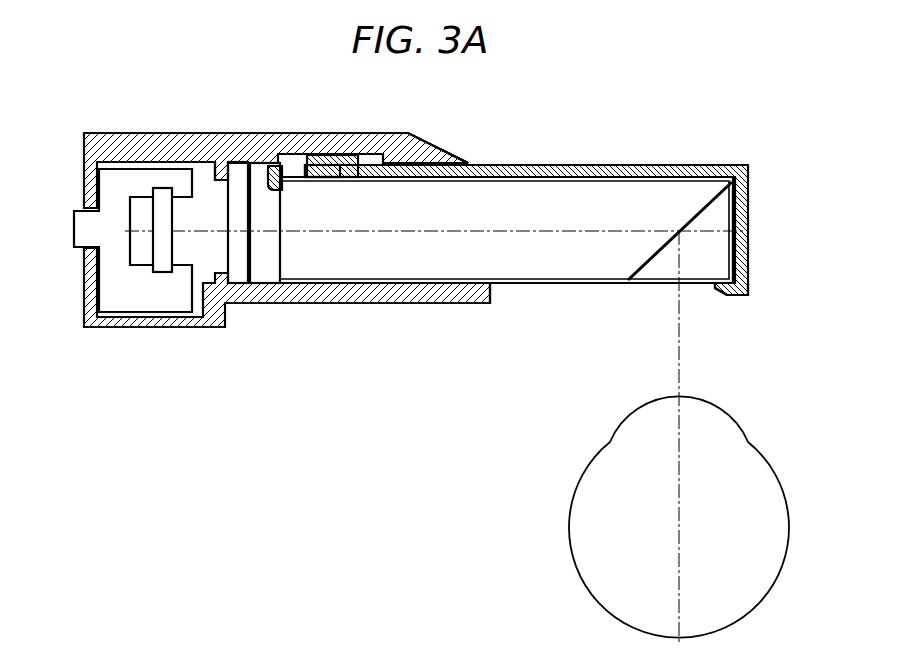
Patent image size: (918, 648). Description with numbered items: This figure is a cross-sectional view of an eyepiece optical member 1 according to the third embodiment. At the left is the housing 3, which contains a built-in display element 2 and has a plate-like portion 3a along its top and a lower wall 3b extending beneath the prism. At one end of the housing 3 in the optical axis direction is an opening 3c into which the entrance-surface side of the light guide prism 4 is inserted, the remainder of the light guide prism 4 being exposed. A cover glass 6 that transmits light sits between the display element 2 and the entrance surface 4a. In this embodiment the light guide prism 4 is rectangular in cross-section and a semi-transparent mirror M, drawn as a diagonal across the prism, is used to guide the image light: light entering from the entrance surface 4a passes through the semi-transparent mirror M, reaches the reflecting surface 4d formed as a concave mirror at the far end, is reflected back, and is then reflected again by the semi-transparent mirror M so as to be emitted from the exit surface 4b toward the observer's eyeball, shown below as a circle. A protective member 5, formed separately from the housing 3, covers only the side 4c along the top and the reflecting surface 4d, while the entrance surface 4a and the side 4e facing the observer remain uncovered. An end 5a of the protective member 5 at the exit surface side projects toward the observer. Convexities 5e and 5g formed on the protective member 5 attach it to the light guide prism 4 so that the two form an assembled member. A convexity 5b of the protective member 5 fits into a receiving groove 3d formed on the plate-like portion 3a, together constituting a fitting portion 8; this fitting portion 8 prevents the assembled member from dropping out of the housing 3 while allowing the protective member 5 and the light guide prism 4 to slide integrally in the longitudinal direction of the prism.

The eyepiece optical member 1 is at (590, 102).
The display element 2 is at (100, 231).
The housing 3 is at (148, 133).
The plate-like portion 3a is at (370, 135).
The lower arm portion 3b is at (378, 303).
The opening 3c is at (474, 161).
The receiving groove 3d is at (292, 184).
The light guide prism 4 is at (558, 200).
The entrance surface 4a is at (282, 238).
The exit surface 4b is at (697, 285).
The side 4c is at (605, 177).
The reflecting surface 4d is at (748, 208).
The side 4e is at (534, 285).
The protective member 5 is at (708, 165).
The end 5a is at (750, 297).
The convexity 5b is at (328, 181).
The convexity 5e is at (272, 168).
The convexity 5g is at (727, 286).
The cover glass 6 is at (238, 214).
The fitting portion 8 is at (327, 154).
The semi-transparent mirror M is at (693, 212).